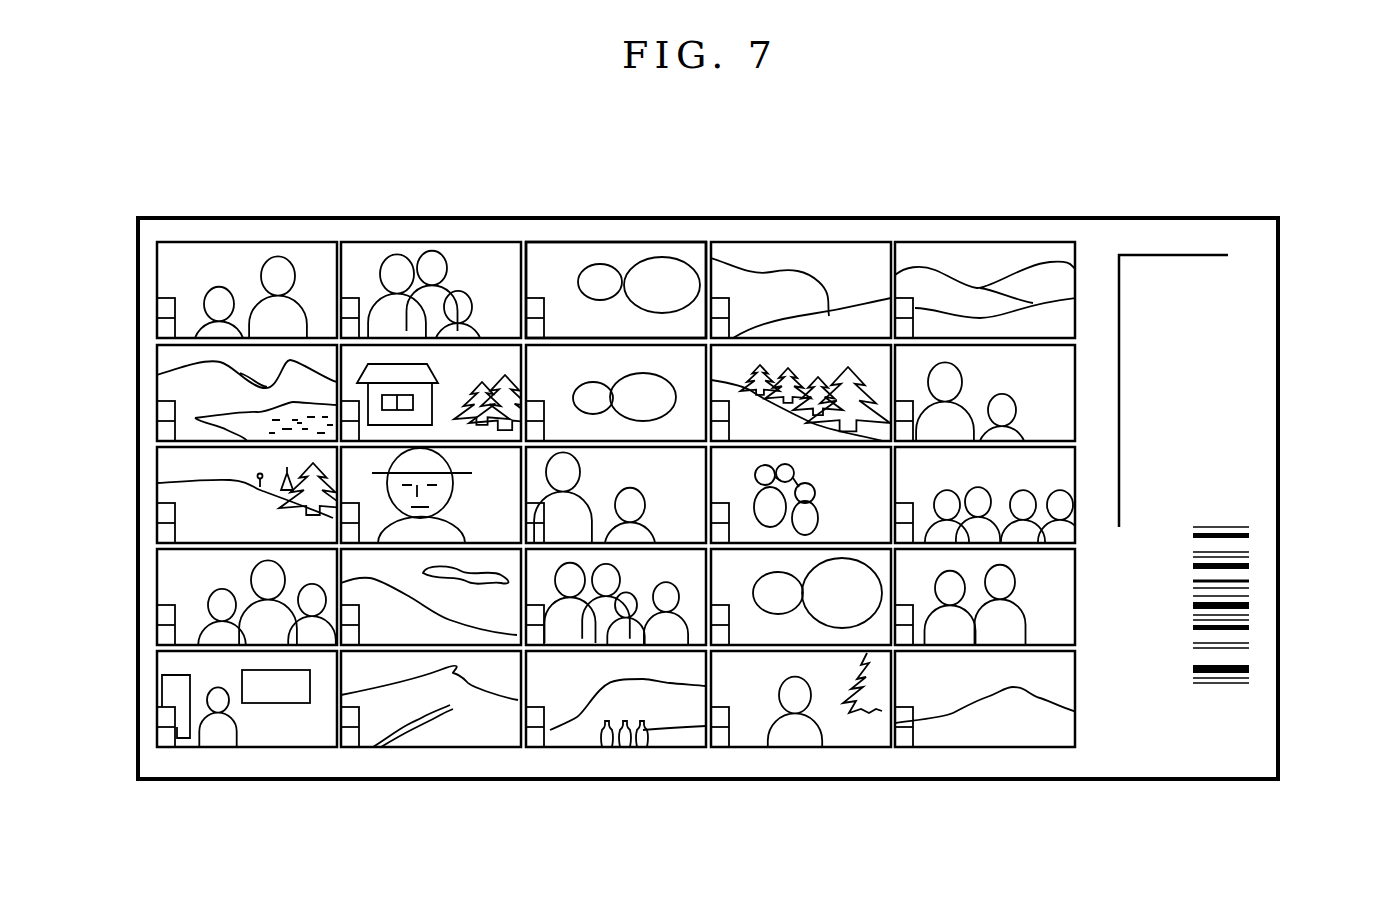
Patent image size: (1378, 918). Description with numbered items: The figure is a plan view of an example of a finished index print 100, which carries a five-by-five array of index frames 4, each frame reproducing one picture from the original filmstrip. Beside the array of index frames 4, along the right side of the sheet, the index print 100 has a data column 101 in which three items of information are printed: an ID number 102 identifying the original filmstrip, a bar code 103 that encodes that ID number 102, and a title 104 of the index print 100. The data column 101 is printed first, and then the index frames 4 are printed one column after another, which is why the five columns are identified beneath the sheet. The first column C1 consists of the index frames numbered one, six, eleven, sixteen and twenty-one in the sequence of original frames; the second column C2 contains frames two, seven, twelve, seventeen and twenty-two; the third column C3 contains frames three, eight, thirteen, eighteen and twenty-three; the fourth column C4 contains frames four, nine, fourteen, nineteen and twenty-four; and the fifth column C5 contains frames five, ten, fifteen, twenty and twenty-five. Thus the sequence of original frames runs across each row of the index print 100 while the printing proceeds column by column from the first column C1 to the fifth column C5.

The index frames 4 is at (523, 262).
The index print 100 is at (731, 190).
The data column 101 is at (1232, 482).
The ID number 102 is at (1112, 745).
The bar code 103 is at (1250, 607).
The title 104 is at (1243, 390).
The first column C1 is at (992, 790).
The second column C2 is at (808, 790).
The third column C3 is at (617, 790).
The fourth column C4 is at (423, 790).
The fifth column C5 is at (229, 790).